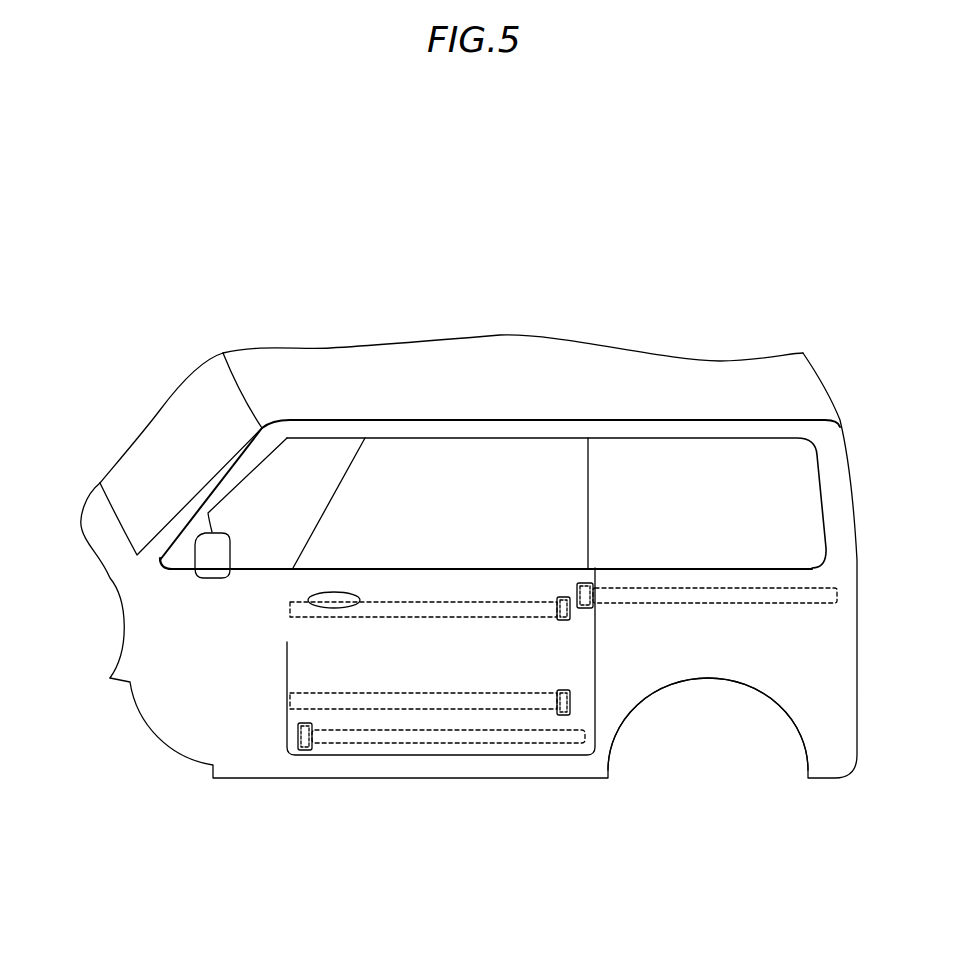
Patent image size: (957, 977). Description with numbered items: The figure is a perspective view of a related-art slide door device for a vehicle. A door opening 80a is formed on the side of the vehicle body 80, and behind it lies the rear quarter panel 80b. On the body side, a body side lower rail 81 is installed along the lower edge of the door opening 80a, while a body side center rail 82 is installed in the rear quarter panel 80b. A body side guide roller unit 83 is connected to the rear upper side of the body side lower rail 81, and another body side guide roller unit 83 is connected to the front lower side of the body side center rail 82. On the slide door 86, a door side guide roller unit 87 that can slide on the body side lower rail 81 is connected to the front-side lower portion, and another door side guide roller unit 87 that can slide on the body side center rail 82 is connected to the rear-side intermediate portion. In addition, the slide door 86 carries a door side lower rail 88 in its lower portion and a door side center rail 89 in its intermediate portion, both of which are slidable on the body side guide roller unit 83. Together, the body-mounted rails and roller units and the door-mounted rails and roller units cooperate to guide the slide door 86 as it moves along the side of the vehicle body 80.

The vehicle body 80 is at (331, 359).
The door opening 80a is at (450, 453).
The rear quarter panel 80b is at (708, 677).
The body side lower rail 81 is at (378, 746).
The body side center rail 82 is at (700, 603).
The body side guide roller unit 83 is at (563, 621).
The slide door 86 is at (287, 648).
The door side guide roller unit 87 is at (586, 609).
The door side lower rail 88 is at (380, 693).
The door side center rail 89 is at (380, 618).